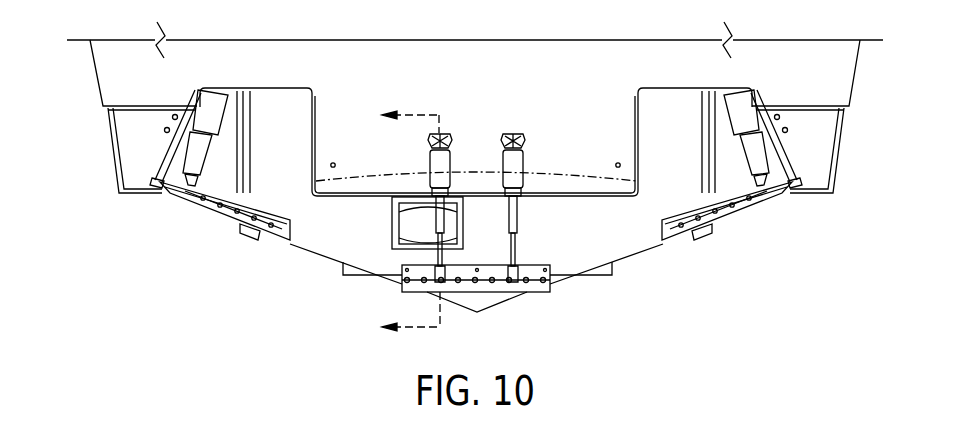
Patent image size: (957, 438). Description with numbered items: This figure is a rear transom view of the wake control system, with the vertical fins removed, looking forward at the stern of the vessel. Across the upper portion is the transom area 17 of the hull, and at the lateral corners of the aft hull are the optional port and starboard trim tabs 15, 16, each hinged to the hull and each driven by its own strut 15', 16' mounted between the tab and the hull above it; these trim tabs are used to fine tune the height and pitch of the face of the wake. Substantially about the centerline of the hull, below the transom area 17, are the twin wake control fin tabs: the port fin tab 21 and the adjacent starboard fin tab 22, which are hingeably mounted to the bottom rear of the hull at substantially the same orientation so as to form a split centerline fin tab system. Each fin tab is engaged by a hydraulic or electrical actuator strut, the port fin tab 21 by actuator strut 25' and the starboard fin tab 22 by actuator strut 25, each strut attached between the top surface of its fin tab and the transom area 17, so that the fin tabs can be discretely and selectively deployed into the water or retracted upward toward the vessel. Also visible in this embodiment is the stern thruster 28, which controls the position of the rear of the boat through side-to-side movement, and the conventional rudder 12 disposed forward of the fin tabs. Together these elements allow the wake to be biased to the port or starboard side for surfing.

The rudder 12 is at (393, 224).
The port trim tab 15 is at (225, 233).
The port trim tab strut 15' is at (189, 118).
The starboard trim tab 16 is at (727, 233).
The starboard trim tab strut 16' is at (763, 118).
The transom area 17 is at (570, 94).
The port fin tab 21 is at (457, 268).
The starboard fin tab 22 is at (536, 263).
The actuator strut 25 is at (535, 200).
The actuator strut 25' is at (412, 200).
The stern thruster 28 is at (418, 232).